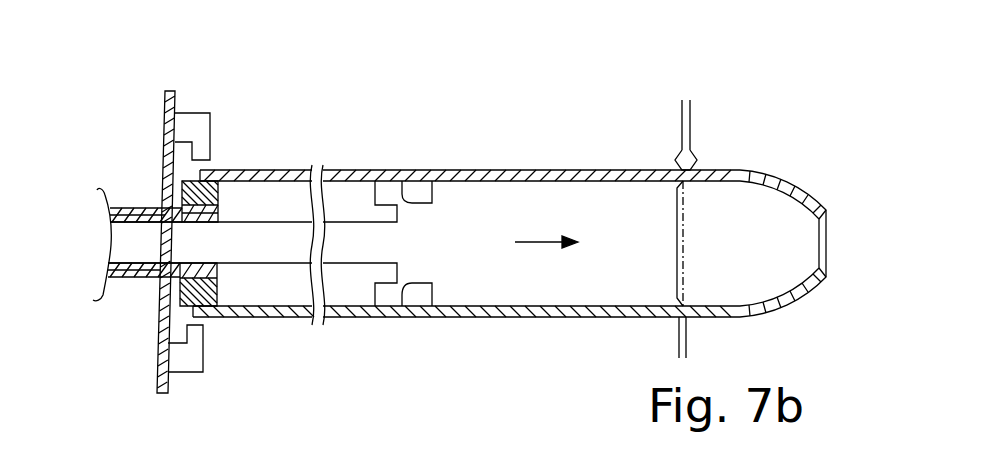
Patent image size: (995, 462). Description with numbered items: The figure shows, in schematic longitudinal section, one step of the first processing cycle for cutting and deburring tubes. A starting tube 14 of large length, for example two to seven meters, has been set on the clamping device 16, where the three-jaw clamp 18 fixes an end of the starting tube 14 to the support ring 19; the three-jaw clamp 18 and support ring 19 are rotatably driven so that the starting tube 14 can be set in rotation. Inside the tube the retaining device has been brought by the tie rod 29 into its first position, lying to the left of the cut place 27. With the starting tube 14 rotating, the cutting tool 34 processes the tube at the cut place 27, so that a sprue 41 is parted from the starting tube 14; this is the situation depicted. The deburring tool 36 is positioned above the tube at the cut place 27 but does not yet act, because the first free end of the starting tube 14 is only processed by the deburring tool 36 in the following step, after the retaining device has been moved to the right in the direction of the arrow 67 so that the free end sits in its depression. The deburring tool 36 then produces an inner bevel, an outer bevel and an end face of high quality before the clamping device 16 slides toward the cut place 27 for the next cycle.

The starting tube 14 is at (270, 175).
The clamping device 16 is at (146, 159).
The three-jaw clamp 18 is at (188, 123).
The support ring 19 is at (205, 190).
The cut place 27 is at (683, 237).
The tie rod 29 is at (273, 253).
The cutting tool 34 is at (686, 343).
The deburring tool 36 is at (682, 127).
The sprue 41 is at (768, 172).
The arrow 67 is at (545, 242).